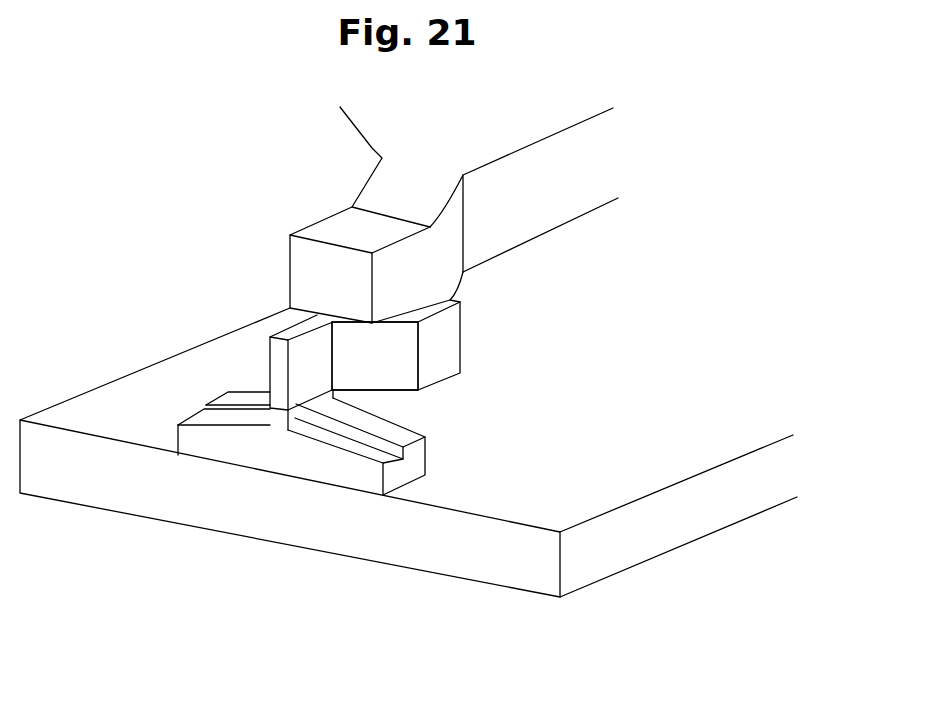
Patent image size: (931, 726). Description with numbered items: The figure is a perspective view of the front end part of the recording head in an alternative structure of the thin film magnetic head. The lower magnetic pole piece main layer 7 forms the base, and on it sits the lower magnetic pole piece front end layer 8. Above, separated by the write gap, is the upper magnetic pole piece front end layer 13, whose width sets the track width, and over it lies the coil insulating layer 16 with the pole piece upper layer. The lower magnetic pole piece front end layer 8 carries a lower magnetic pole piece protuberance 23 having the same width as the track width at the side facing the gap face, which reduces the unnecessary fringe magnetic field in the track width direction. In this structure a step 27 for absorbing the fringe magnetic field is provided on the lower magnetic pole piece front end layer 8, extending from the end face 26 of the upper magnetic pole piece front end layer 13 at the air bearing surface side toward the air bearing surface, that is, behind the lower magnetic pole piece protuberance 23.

The lower magnetic pole piece main layer 7 is at (688, 520).
The lower magnetic pole piece front end layer 8 is at (303, 462).
The upper magnetic pole piece front end layer 13 is at (447, 357).
The coil insulating layer 16 is at (562, 168).
The lower magnetic pole piece protuberance 23 is at (280, 420).
The end face 26 is at (387, 367).
The step 27 is at (340, 413).